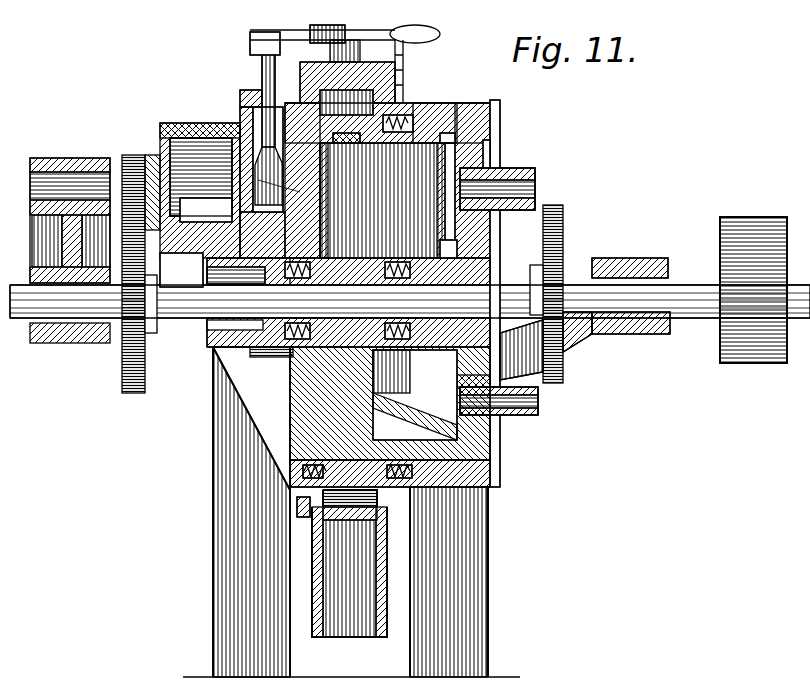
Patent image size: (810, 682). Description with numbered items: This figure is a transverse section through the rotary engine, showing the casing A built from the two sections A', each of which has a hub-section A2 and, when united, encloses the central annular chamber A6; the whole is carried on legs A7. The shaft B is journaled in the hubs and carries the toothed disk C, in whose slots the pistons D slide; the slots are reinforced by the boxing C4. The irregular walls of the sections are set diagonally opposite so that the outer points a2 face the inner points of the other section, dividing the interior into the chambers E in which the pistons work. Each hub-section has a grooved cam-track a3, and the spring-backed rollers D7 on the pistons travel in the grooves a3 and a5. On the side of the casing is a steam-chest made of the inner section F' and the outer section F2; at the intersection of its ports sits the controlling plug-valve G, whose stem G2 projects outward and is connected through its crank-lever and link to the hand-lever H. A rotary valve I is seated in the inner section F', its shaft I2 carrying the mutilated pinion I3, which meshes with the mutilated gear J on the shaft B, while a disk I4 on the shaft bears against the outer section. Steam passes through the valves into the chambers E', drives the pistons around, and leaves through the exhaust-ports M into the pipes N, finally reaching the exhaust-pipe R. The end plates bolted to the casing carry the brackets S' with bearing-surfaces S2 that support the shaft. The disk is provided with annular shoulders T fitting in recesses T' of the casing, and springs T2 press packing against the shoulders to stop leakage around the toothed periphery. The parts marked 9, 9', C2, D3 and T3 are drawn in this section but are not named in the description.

The lever block 9 is at (314, 25).
The sliding block 9' is at (246, 43).
The controlling hand-lever H is at (345, 52).
The casing A is at (365, 153).
The casing section A' is at (339, 378).
The hub-section A2 is at (213, 360).
The central annular chamber A6 is at (290, 98).
The legs A7 is at (225, 565).
The controlling plug-valve G is at (303, 192).
The valve-stem G2 is at (262, 82).
The toothed disk C is at (390, 403).
The casing ring C2 is at (420, 118).
The boxing C4 is at (345, 143).
The chamber E is at (487, 416).
The chamber E' is at (460, 108).
The outer point a2 is at (493, 140).
The grooved cam-track a3 is at (405, 400).
The groove a5 is at (402, 112).
The exhaust-port M is at (500, 168).
The exhaust pipe N is at (537, 195).
The inner section of steam-chest F' is at (211, 188).
The outer section of steam-chest F2 is at (172, 123).
The rotary valve I is at (240, 210).
The valve shaft I2 is at (201, 177).
The mutilated pinion I3 is at (130, 160).
The disk I4 is at (181, 270).
The piston D is at (387, 200).
The drum chamber D3 is at (410, 378).
The roller D7 is at (425, 140).
The annular shoulder T is at (348, 352).
The recess T' is at (370, 422).
The spring T2 is at (400, 335).
The spring T3 is at (305, 335).
The mutilated gear J is at (118, 348).
The shaft B is at (675, 270).
The bracket S' is at (551, 346).
The bearing-surface S2 is at (632, 334).
The exhaust-pipe R is at (349, 563).